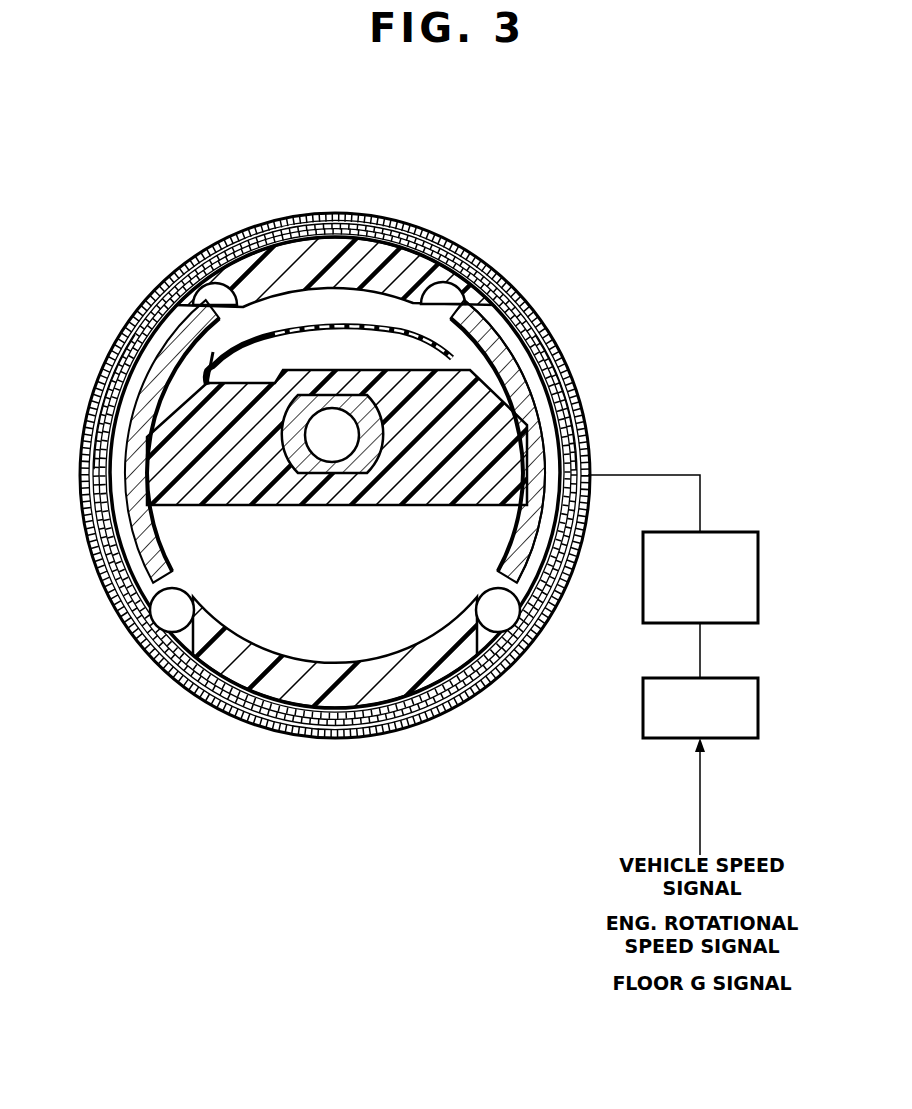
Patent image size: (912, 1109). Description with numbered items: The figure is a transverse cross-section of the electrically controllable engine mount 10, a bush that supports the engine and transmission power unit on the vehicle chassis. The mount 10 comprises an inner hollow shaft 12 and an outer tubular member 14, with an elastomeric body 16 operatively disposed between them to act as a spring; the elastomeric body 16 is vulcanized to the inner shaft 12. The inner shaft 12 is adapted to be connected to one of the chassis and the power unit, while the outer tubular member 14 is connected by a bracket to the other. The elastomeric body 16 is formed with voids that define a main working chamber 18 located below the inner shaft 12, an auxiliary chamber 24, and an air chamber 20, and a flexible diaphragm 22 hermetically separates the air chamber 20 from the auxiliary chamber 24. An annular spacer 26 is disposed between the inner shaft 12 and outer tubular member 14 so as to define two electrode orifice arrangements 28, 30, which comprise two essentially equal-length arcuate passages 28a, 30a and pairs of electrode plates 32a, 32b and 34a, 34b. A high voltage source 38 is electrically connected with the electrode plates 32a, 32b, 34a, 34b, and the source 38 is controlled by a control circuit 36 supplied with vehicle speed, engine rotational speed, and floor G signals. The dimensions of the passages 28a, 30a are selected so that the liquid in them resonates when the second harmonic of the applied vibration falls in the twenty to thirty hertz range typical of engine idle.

The engine mount 10 is at (373, 145).
The inner hollow shaft 12 is at (150, 405).
The outer tubular member 14 is at (85, 509).
The elastomeric body 16 is at (197, 500).
The main working chamber 18 is at (297, 607).
The air chamber 20 is at (322, 348).
The flexible diaphragm 22 is at (297, 323).
The auxiliary chamber 24 is at (418, 234).
The annular spacer 26 is at (373, 248).
The electrode orifice arrangement 28 is at (135, 447).
The arcuate passage 28a is at (290, 420).
The electrode orifice arrangement 30 is at (540, 372).
The arcuate passage 30a is at (528, 410).
The electrode plate 32a is at (165, 357).
The electrode plate 32b is at (182, 297).
The electrode plate 34a is at (592, 423).
The electrode plate 34b is at (517, 322).
The control circuit 36 is at (643, 693).
The high voltage source 38 is at (643, 572).